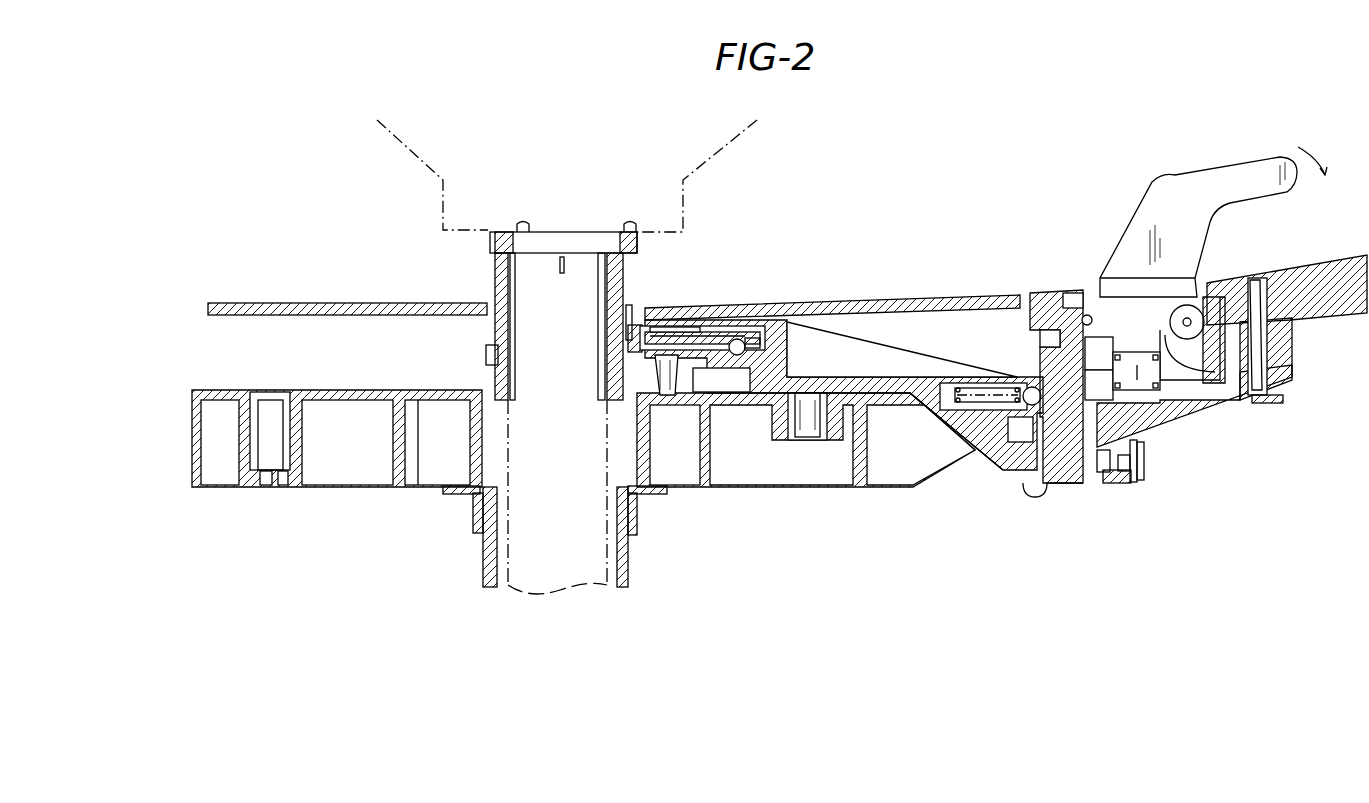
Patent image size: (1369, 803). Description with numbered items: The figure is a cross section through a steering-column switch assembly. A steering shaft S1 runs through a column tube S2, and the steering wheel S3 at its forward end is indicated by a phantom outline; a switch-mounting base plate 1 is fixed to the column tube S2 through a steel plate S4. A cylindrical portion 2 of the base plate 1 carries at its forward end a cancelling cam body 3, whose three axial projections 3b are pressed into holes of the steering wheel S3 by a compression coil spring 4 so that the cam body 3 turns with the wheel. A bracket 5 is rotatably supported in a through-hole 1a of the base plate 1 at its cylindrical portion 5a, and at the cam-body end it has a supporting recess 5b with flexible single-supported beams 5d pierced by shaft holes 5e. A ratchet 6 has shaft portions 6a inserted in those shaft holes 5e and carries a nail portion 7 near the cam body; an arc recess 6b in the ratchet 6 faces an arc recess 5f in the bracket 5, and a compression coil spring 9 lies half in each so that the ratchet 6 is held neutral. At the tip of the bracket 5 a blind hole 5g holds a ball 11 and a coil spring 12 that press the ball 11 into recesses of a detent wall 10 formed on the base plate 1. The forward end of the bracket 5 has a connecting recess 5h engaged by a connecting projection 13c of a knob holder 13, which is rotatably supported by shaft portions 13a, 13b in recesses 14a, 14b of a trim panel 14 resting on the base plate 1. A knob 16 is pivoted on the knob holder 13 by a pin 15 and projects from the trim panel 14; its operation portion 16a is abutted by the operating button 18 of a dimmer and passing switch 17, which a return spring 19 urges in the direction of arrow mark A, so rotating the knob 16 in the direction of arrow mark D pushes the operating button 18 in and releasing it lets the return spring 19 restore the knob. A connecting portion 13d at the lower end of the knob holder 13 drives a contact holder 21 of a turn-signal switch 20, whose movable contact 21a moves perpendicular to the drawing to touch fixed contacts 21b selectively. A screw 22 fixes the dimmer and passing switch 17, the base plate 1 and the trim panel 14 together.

The switch-mounting base plate 1 is at (350, 390).
The through-hole 1a is at (790, 440).
The cylindrical portion 2 is at (513, 350).
The cancelling cam body 3 is at (623, 284).
The projections 3b is at (523, 222).
The compression coil spring 4 is at (486, 354).
The bracket 5 is at (905, 377).
The cylindrical portion 5a is at (815, 437).
The supporting recess 5b is at (640, 328).
The single-supported beams 5d is at (720, 335).
The shaft holes 5e is at (690, 327).
The arc recess 5f is at (721, 380).
The blind hole 5g is at (962, 388).
The connecting recess 5h is at (1000, 470).
The ratchet 6 is at (735, 343).
The shaft portions 6a is at (652, 330).
The arc recess 6b is at (752, 349).
The nail portion 7 is at (629, 310).
The compression coil spring 9 is at (748, 348).
The detent wall 10 is at (1033, 408).
The ball 11 is at (1021, 429).
The coil spring 12 is at (972, 408).
The knob holder 13 is at (1040, 365).
The shaft portion 13a is at (1063, 300).
The shaft portion 13b is at (1255, 300).
The connecting projection 13c is at (1035, 490).
The connecting portion 13d is at (1065, 488).
The trim panel 14 is at (1326, 262).
The recess 14a is at (1045, 335).
The recess 14b is at (1292, 333).
The pin 15 is at (1183, 318).
The knob 16 is at (1133, 228).
The operation portion 16a is at (1087, 314).
The dimmer and passing switch 17 is at (1178, 425).
The operating button 18 is at (1099, 353).
The return spring 19 is at (1099, 384).
The turn-signal switch 20 is at (1112, 486).
The contact holder 21 is at (1100, 475).
The movable contact 21a is at (1125, 482).
The fixed contacts 21b is at (1145, 458).
The screw 22 is at (1262, 403).
The arrow mark A is at (1136, 361).
The arrow mark D is at (1308, 150).
The steering shaft S1 is at (598, 558).
The column tube S2 is at (628, 583).
The steering wheel S3 is at (683, 224).
The steel plate S4 is at (640, 530).